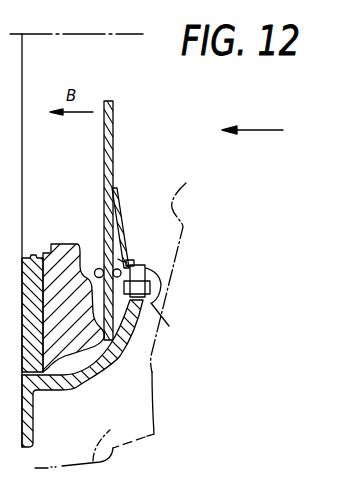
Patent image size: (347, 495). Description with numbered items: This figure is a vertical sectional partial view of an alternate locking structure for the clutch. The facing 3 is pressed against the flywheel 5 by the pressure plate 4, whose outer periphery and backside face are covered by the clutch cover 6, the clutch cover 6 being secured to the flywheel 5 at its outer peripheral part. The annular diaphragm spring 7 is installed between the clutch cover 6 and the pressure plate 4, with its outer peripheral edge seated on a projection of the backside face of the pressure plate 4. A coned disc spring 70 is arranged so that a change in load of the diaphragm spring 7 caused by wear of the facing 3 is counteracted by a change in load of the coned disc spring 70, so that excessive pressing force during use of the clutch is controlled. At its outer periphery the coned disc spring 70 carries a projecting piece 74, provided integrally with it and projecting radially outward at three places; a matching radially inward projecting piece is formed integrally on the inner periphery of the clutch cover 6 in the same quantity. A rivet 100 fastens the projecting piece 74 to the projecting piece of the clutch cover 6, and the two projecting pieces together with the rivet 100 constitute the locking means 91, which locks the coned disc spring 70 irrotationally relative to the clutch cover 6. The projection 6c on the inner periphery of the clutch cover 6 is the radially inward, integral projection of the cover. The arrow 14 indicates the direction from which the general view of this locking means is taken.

The facing 3 is at (42, 257).
The pressure plate 4 is at (60, 258).
The flywheel 5 is at (17, 176).
The clutch cover 6 is at (122, 360).
The projection 6c is at (147, 270).
The diaphragm spring 7 is at (113, 128).
The arrow XIV 14 is at (267, 131).
The coned disc spring 70 is at (121, 213).
The projecting piece 74 is at (133, 262).
The locking means 91 is at (171, 322).
The rivet 100 is at (148, 289).